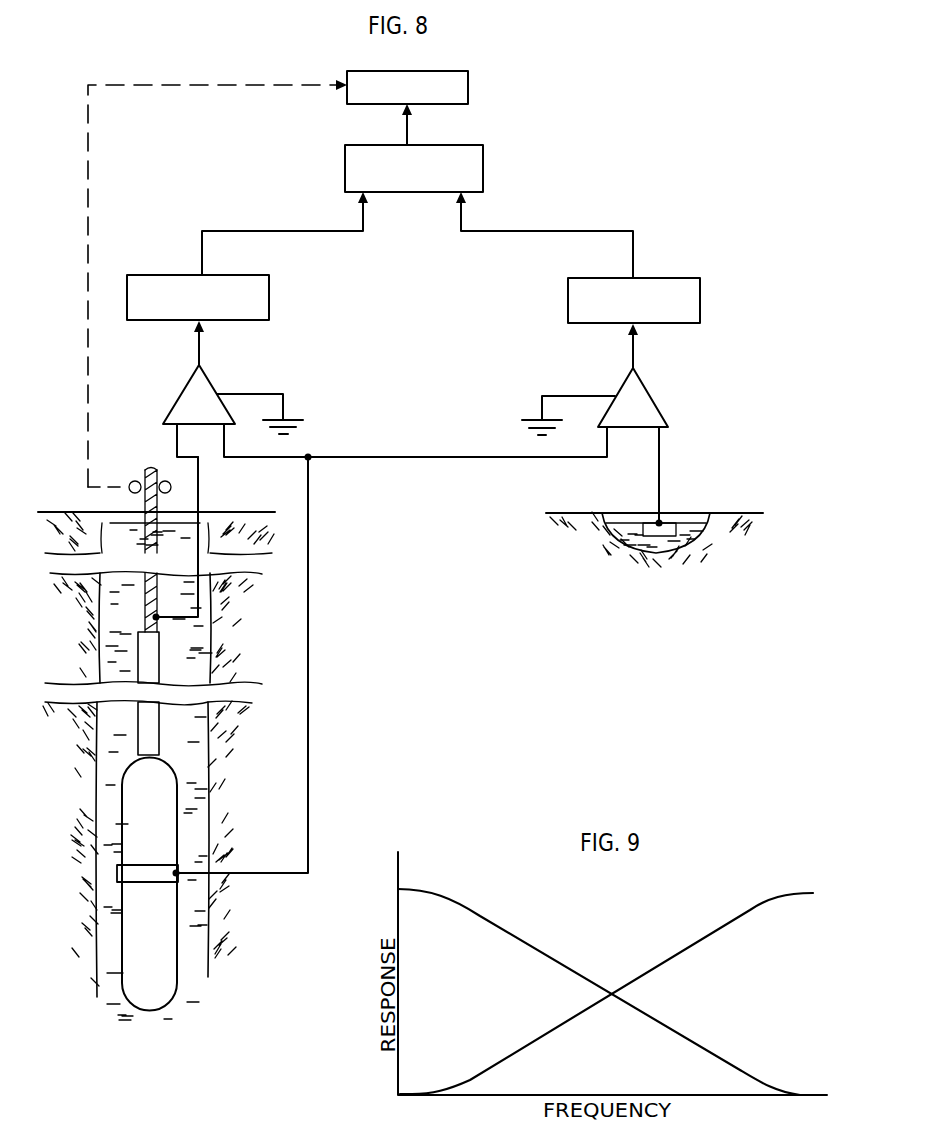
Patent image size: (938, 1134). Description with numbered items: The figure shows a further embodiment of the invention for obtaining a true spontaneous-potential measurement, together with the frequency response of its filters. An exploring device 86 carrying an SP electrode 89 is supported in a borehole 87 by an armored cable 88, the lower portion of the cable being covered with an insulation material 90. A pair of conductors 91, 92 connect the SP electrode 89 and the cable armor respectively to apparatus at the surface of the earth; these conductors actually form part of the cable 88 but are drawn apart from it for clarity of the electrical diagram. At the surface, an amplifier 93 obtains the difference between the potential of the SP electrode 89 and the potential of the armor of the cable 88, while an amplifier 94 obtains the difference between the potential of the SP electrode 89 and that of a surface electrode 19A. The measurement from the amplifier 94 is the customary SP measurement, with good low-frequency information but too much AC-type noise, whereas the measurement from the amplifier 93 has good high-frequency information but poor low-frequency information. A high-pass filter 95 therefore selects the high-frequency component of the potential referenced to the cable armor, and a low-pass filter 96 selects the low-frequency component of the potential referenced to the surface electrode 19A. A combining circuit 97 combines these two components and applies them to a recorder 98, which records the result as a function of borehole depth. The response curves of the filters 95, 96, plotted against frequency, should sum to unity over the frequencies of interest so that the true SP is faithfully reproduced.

In FIG. 8, the recorder 98 is at (425, 97).
In FIG. 8, the combining circuit 97 is at (463, 178).
In FIG. 8, the high-pass filter 95 is at (248, 310).
In FIG. 9, the high-pass filter 95 is at (470, 908).
In FIG. 8, the low-pass filter 96 is at (568, 287).
In FIG. 9, the low-pass filter 96 is at (650, 972).
In FIG. 8, the amplifier 93 is at (190, 398).
In FIG. 8, the amplifier 94 is at (640, 413).
In FIG. 8, the conductor 92 is at (199, 480).
In FIG. 8, the conductor 91 is at (310, 550).
In FIG. 8, the surface electrode 19A is at (661, 521).
In FIG. 8, the armored cable 88 is at (143, 583).
In FIG. 8, the borehole 87 is at (104, 637).
In FIG. 8, the transducer 90 is at (153, 672).
In FIG. 8, the SP electrode 89 is at (135, 872).
In FIG. 8, the exploring device 86 is at (192, 975).